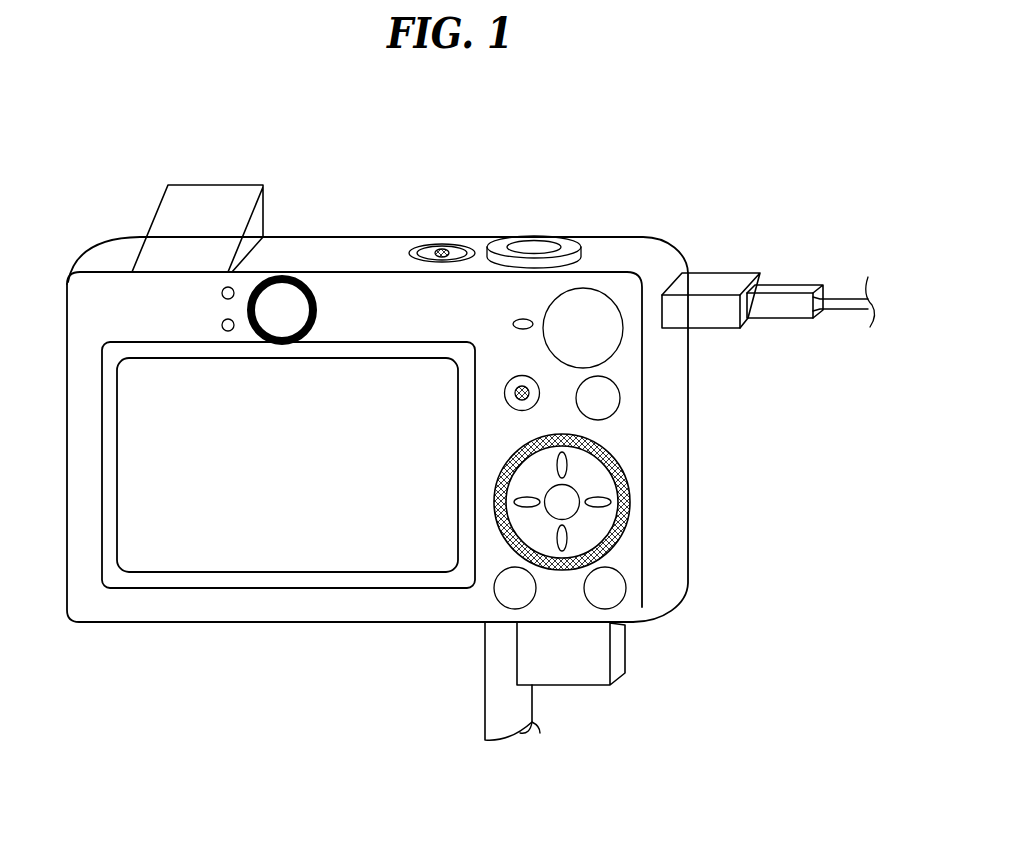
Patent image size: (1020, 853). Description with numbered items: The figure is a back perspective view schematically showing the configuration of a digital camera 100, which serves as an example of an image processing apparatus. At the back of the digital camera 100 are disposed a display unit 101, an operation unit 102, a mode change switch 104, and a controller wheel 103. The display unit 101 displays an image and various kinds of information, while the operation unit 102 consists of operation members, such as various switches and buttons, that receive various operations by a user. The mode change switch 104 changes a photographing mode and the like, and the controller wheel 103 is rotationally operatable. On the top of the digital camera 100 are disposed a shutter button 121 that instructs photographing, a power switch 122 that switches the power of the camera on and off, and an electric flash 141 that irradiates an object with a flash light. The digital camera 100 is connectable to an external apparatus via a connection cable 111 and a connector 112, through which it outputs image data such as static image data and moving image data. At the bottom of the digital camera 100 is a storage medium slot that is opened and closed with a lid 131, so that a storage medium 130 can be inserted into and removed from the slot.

The digital camera 100 is at (163, 665).
The display unit 101 is at (318, 548).
The operation unit 102 is at (540, 263).
The controller wheel 103 is at (510, 543).
The mode change switch 104 is at (598, 307).
The connection cable 111 is at (792, 288).
The connector 112 is at (717, 282).
The shutter button 121 is at (537, 243).
The power switch 122 is at (442, 245).
The storage medium 130 is at (595, 660).
The lid 131 is at (536, 728).
The electric flash 141 is at (212, 202).